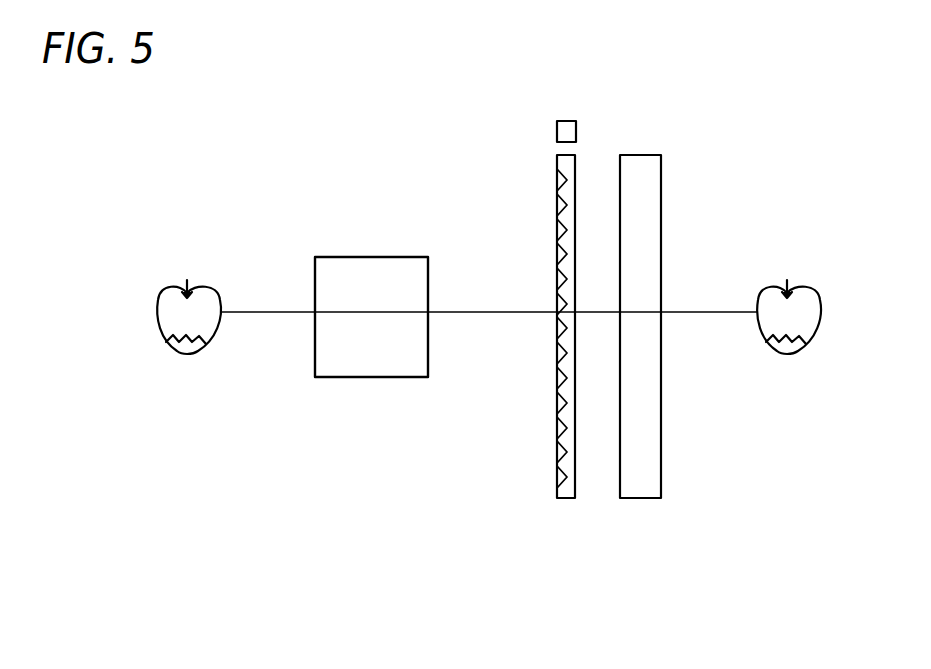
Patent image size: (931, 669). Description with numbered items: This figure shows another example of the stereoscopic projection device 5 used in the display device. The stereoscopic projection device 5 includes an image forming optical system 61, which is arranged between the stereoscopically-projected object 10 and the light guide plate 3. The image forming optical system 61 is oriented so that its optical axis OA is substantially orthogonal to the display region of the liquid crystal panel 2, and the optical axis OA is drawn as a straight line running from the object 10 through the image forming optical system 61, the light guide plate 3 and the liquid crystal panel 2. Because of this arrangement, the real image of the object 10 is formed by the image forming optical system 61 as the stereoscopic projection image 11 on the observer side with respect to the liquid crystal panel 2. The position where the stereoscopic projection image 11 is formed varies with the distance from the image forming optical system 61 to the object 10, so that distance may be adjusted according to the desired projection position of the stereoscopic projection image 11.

The stereoscopically-projected object 10 is at (204, 350).
The stereoscopic projection image 11 is at (804, 350).
The stereoscopic projection device 5 is at (371, 375).
The image forming optical system 61 is at (313, 436).
The optical axis OA is at (532, 314).
The light guide plate 3 is at (568, 498).
The liquid crystal panel 2 is at (638, 498).